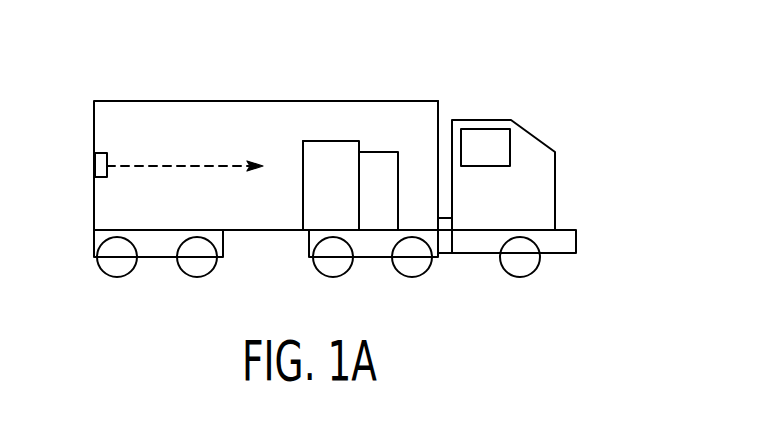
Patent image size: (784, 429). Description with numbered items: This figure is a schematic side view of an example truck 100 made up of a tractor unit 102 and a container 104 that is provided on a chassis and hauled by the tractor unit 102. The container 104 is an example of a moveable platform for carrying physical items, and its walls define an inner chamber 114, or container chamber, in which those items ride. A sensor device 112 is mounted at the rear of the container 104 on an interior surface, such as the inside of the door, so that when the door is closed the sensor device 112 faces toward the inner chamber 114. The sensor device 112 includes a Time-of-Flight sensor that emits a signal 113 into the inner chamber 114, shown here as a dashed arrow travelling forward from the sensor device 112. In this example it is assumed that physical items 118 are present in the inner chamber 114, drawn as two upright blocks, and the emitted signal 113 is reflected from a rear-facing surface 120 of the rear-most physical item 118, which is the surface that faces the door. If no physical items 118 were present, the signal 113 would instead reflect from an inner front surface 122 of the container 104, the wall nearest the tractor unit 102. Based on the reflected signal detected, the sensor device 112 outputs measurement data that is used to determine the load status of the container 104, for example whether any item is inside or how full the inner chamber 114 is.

The truck 100 is at (612, 144).
The tractor unit 102 is at (482, 120).
The container 104 is at (243, 101).
The sensor device 112 is at (97, 168).
The signal 113 is at (181, 166).
The inner chamber 114 is at (288, 140).
The physical items 118 is at (331, 141).
The rear-facing surface 120 is at (303, 202).
The inner front surface 122 is at (438, 120).